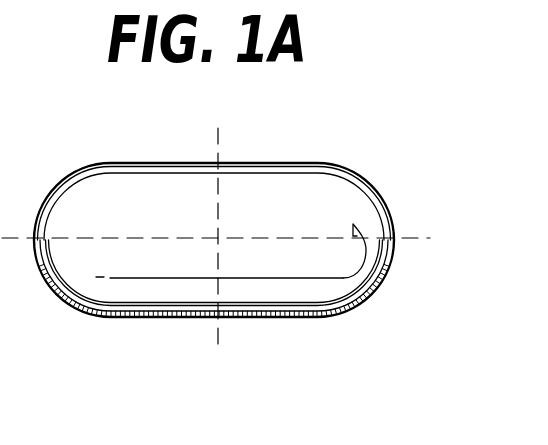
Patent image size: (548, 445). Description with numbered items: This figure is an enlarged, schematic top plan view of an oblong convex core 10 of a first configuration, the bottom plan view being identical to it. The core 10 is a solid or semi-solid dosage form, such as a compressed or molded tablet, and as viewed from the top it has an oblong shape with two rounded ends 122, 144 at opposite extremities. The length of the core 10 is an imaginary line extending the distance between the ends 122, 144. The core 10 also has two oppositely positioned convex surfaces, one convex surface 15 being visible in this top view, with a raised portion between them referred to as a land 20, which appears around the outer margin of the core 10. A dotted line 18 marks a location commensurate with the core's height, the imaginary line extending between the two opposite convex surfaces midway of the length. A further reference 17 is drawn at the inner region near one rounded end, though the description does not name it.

The oblong convex core 10 is at (389, 151).
The land 20 is at (285, 164).
The inner core region 17 is at (358, 217).
The convex surface 15 is at (155, 217).
The rounded end 122 is at (83, 272).
The rounded end 144 is at (347, 282).
The dotted line 18 is at (220, 333).